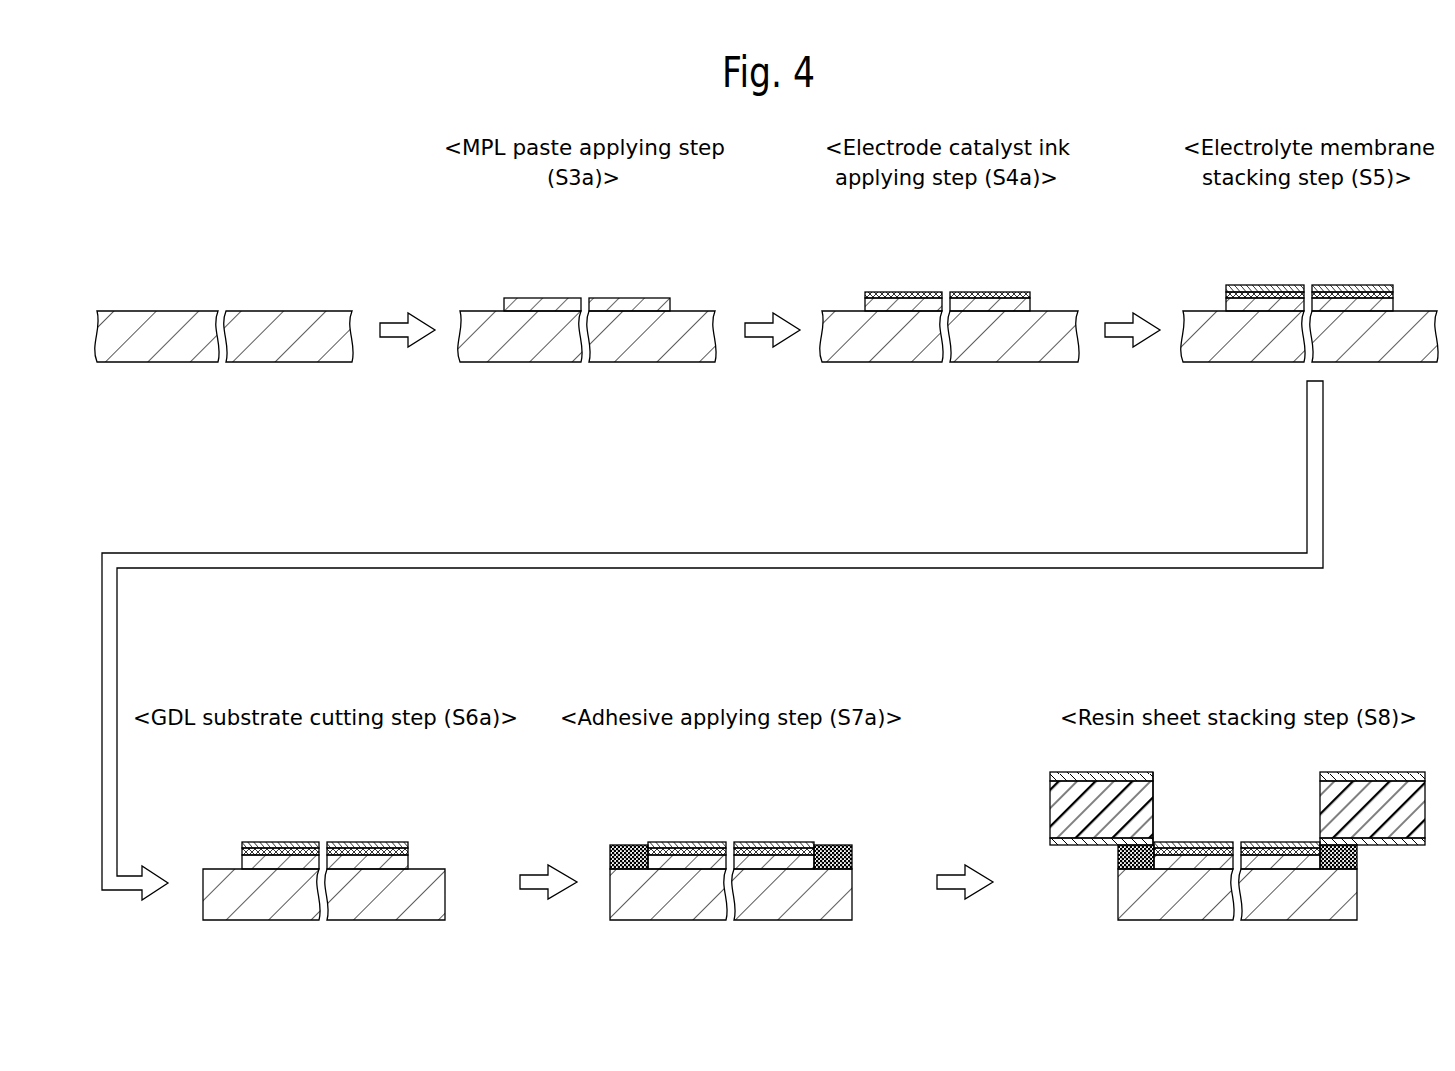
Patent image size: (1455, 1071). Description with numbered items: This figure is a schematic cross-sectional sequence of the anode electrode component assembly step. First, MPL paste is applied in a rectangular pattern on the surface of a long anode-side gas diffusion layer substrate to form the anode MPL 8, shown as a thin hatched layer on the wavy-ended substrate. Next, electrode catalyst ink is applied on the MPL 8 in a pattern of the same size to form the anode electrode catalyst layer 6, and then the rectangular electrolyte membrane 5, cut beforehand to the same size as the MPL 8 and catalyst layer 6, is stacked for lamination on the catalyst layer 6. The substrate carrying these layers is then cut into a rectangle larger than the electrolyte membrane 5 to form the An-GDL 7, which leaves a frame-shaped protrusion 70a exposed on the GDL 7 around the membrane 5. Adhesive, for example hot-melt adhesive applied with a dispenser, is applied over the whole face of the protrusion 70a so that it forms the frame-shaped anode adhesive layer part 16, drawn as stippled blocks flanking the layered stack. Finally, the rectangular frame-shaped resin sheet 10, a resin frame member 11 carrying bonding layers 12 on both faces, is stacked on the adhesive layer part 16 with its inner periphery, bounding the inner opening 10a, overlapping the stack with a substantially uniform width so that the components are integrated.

The electrolyte membrane 5 is at (1320, 290).
The anode electrode catalyst layer 6 is at (895, 293).
The anode-side gas diffusion layer 7 is at (185, 352).
The anode microporous layer 8 is at (607, 303).
The resin sheet 10 is at (1191, 791).
The inner opening 10a is at (1155, 790).
The resin frame member 11 is at (1050, 808).
The bonding layer 12 is at (1050, 778).
The anode adhesive layer part 16 is at (852, 858).
The protrusion 70a is at (440, 900).